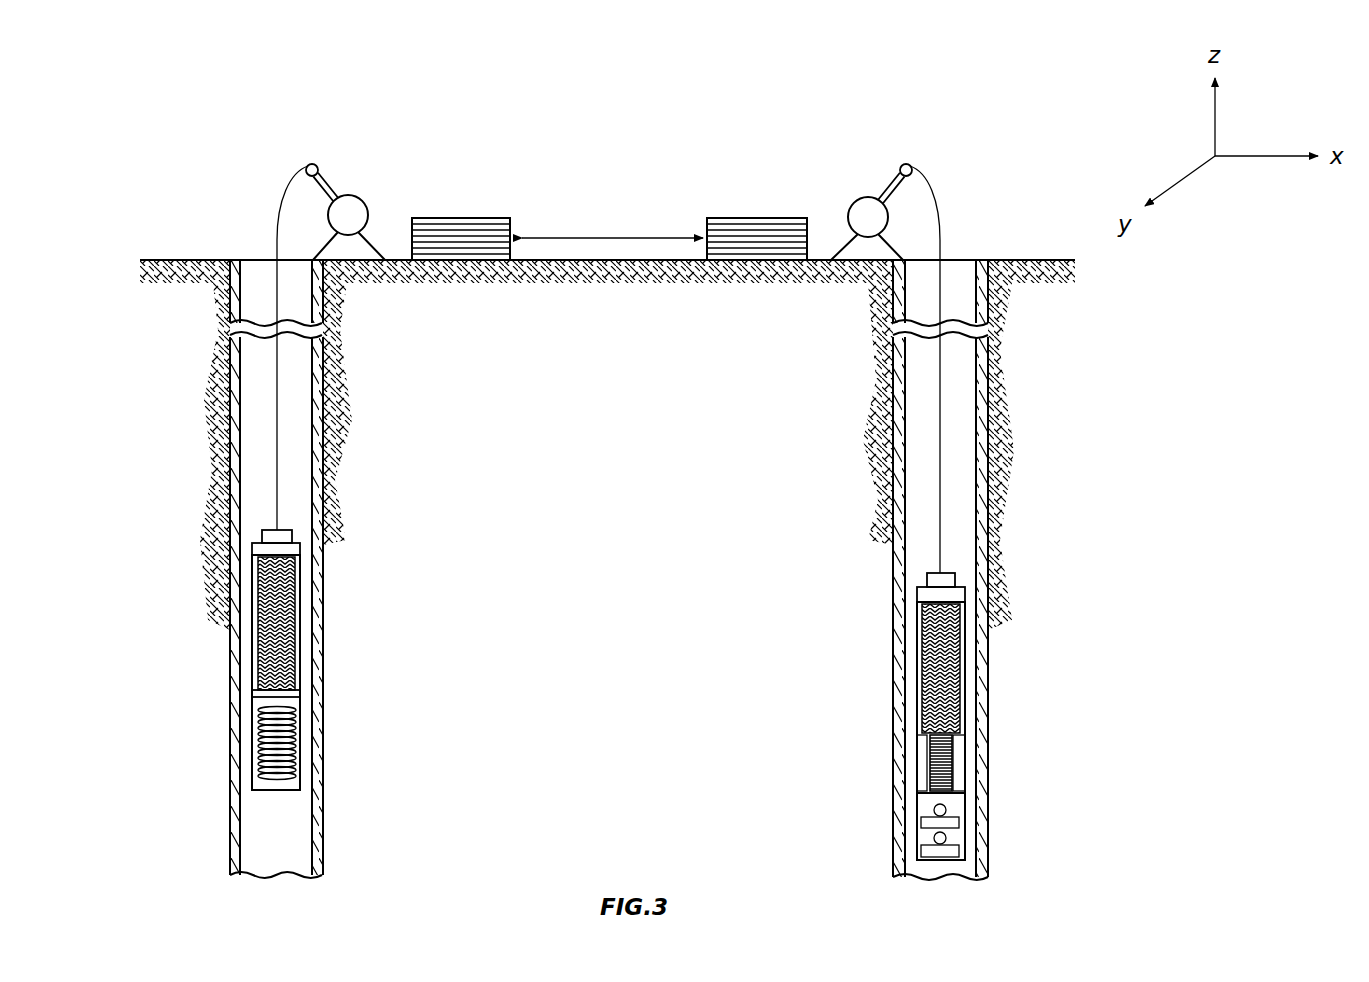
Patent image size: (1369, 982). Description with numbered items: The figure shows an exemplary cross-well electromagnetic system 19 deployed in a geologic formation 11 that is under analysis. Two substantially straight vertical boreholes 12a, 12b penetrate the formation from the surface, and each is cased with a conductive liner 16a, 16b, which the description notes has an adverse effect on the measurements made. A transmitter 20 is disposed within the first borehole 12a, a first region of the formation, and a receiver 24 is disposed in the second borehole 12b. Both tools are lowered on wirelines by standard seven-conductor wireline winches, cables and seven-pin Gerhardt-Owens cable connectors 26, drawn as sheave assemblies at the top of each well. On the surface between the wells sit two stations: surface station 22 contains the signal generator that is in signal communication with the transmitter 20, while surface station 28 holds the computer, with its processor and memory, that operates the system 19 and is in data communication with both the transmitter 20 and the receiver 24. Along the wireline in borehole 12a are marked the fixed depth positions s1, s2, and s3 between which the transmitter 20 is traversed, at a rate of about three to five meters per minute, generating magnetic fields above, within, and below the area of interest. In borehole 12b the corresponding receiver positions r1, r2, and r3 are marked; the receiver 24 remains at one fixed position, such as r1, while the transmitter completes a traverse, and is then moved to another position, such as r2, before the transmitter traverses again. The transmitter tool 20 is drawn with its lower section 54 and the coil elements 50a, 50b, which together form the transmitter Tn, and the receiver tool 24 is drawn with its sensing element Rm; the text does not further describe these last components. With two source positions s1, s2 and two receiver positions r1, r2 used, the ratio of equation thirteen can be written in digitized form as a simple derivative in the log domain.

The system 19 is at (233, 110).
The geologic formation 11 is at (622, 386).
The wireline winches, cables and cable connectors 26 is at (356, 200).
The surface station 22 is at (473, 218).
The surface station 28 is at (745, 218).
The conductive liner 16a is at (228, 395).
The borehole 12a is at (295, 428).
The transmitter depth position s1 is at (277, 300).
The transmitter depth position s2 is at (277, 475).
The transmitter depth position s3 is at (282, 605).
The transmitter 20 is at (286, 632).
The source coupling section 54 is at (297, 707).
The transmitter element 50a is at (262, 743).
The transmitter element 50b is at (262, 768).
The n-th transmitter Tn is at (286, 745).
The conductive liner 16b is at (990, 405).
The borehole 12b is at (965, 360).
The receiver position r1 is at (937, 300).
The receiver position r2 is at (937, 425).
The receiver position r3 is at (935, 598).
The receiver 24 is at (951, 642).
The m-th receiver Rm is at (871, 771).